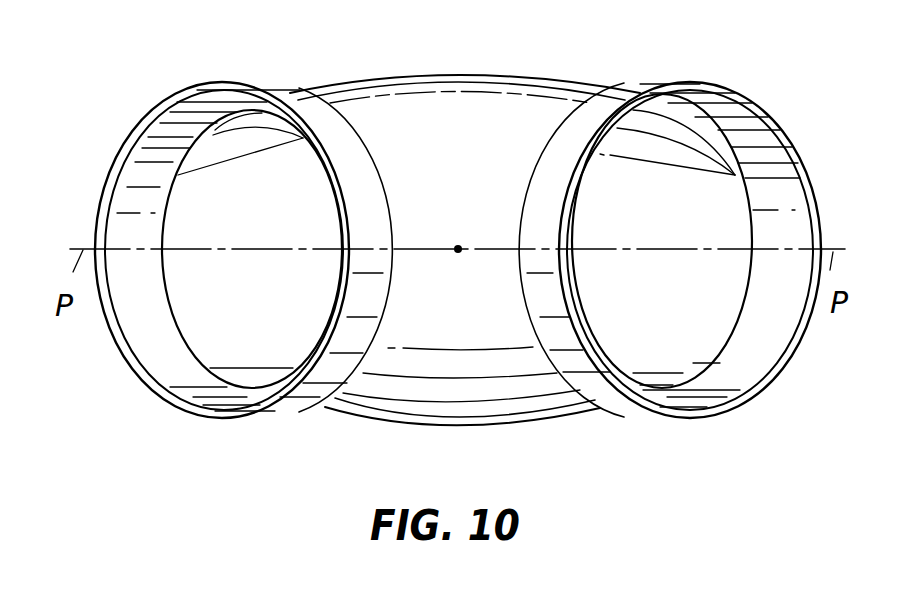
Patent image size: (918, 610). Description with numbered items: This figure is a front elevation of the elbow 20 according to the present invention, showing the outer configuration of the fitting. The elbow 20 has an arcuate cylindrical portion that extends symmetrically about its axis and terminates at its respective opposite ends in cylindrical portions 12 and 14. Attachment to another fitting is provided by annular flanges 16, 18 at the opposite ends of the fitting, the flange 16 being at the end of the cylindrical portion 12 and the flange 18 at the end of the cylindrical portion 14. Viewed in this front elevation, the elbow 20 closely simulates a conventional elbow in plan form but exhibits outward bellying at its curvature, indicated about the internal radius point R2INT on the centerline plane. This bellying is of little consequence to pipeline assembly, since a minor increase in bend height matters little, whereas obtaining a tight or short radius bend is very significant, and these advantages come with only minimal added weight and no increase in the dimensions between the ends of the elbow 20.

The cylindrical portion 12 is at (783, 197).
The cylindrical portion 14 is at (133, 190).
The annular flange 16 is at (767, 108).
The annular flange 18 is at (175, 100).
The elbow 20 is at (428, 90).
The internal radius center point R2INT is at (459, 253).